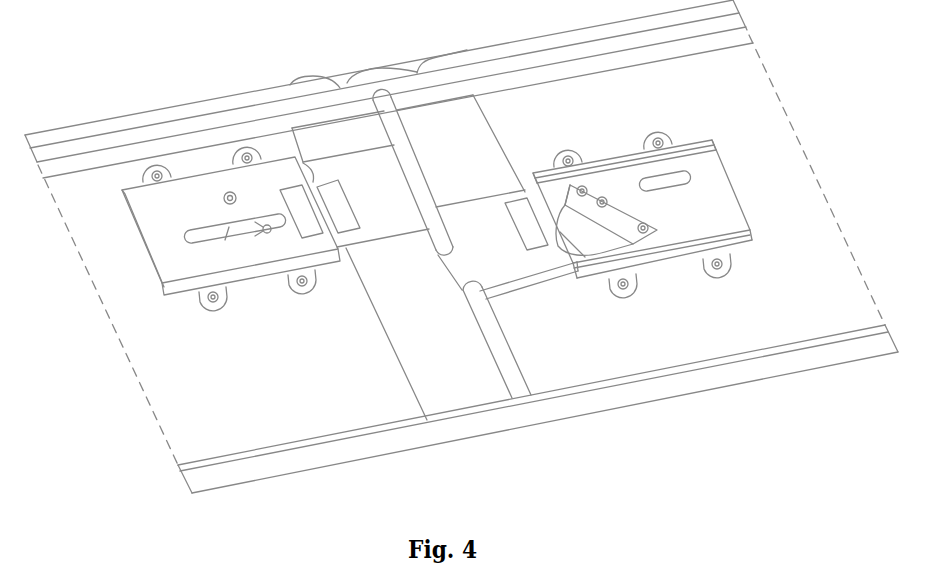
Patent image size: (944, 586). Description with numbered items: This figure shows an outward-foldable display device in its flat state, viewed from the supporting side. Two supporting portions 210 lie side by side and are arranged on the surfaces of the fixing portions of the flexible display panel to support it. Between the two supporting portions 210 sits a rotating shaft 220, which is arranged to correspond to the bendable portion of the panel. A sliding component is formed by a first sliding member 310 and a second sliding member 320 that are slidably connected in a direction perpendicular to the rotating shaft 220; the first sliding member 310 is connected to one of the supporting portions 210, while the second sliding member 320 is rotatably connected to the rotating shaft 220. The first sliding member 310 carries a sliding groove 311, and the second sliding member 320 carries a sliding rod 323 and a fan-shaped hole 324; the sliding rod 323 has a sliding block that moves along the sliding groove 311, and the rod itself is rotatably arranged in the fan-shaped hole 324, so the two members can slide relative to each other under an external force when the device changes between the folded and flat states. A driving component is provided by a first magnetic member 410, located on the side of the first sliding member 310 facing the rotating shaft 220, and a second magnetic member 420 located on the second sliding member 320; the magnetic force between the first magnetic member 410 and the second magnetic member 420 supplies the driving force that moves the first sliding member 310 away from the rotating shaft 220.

The supporting portion 210 is at (392, 366).
The rotating shaft 220 is at (495, 344).
The first sliding member 310 is at (178, 285).
The sliding groove 311 is at (206, 237).
The second sliding member 320 is at (384, 230).
The sliding rod 323 is at (258, 234).
The fan-shaped hole 324 is at (560, 214).
The first magnetic member 410 is at (296, 195).
The second magnetic member 420 is at (343, 200).